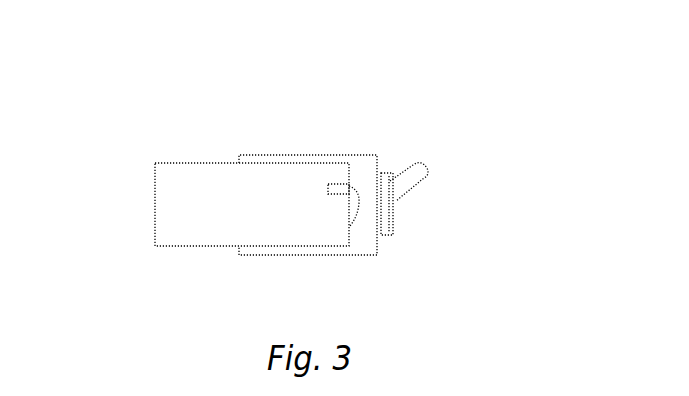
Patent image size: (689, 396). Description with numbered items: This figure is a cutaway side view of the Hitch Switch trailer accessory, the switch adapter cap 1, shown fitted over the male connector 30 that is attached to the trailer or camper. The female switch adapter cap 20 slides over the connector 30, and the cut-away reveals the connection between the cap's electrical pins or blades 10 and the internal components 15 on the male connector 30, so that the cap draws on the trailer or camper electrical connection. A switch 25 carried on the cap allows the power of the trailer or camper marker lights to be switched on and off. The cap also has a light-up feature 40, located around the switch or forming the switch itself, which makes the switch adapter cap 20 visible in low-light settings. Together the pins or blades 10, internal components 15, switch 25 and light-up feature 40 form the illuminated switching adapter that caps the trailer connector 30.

The switch adapter cap 1 is at (485, 250).
The electrical pins or blades 10 is at (333, 191).
The internal components 15 is at (342, 192).
The switch adapter cap 20 is at (357, 167).
The switch 25 is at (420, 182).
The male connector 30 is at (175, 211).
The light-up feature 40 is at (383, 238).